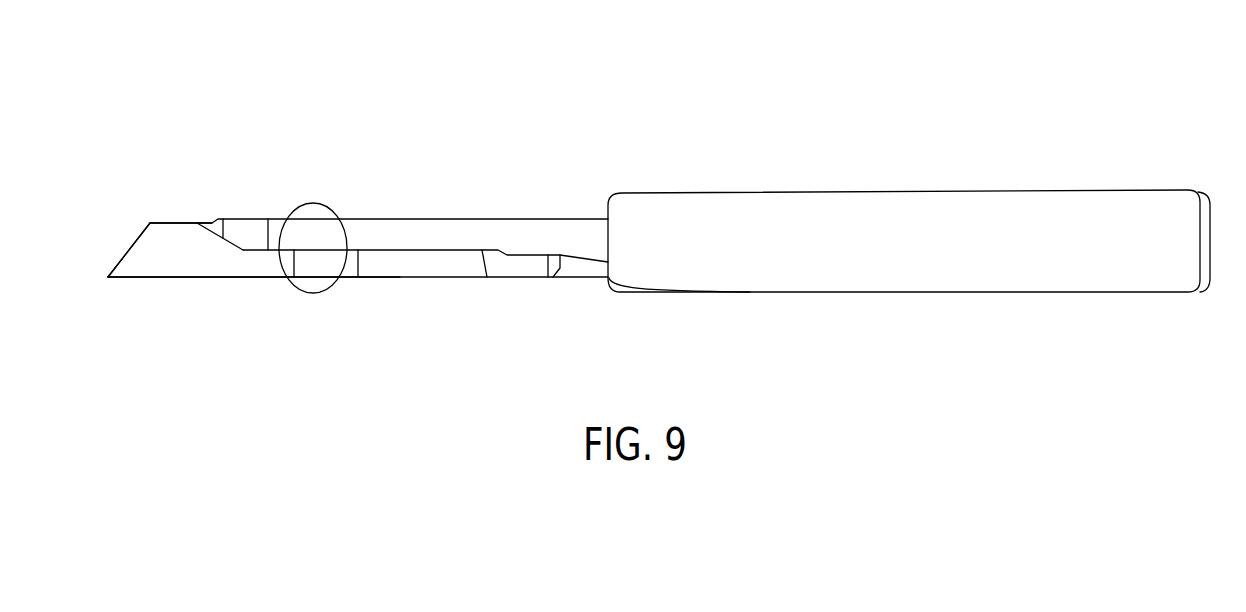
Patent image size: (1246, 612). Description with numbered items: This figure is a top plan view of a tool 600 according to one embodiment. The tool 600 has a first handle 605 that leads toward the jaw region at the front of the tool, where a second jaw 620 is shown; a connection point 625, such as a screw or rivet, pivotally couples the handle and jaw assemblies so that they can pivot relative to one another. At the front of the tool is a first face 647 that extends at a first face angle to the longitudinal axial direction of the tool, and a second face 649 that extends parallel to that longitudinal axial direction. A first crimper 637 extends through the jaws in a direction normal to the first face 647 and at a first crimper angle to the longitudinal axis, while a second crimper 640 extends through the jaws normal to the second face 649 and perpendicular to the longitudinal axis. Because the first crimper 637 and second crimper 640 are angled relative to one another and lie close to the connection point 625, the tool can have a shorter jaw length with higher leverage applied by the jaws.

The tool 600 is at (900, 101).
The first handle 605 is at (963, 285).
The second jaw 620 is at (212, 262).
The connection point 625 is at (322, 207).
The first crimper 637 is at (162, 277).
The second crimper 640 is at (137, 240).
The first face 647 is at (127, 257).
The second face 649 is at (178, 223).